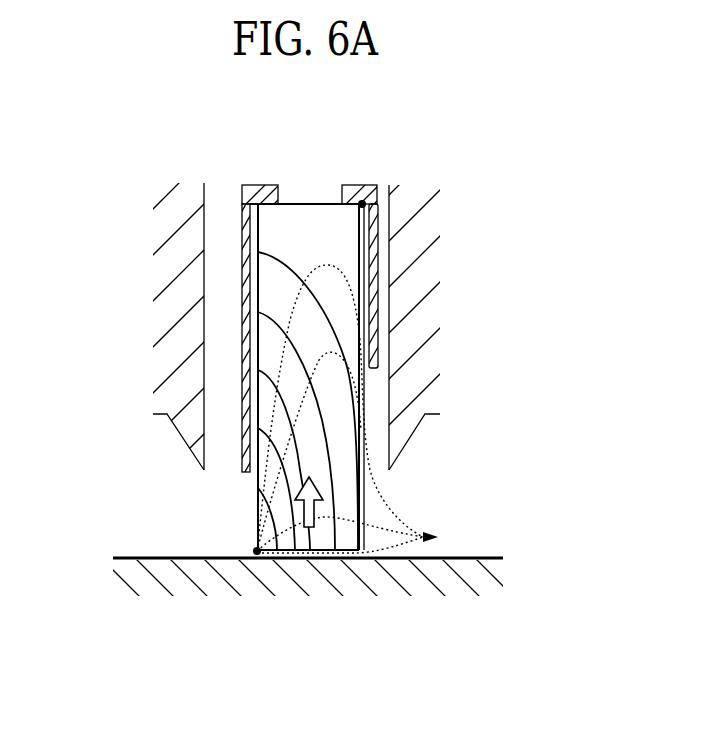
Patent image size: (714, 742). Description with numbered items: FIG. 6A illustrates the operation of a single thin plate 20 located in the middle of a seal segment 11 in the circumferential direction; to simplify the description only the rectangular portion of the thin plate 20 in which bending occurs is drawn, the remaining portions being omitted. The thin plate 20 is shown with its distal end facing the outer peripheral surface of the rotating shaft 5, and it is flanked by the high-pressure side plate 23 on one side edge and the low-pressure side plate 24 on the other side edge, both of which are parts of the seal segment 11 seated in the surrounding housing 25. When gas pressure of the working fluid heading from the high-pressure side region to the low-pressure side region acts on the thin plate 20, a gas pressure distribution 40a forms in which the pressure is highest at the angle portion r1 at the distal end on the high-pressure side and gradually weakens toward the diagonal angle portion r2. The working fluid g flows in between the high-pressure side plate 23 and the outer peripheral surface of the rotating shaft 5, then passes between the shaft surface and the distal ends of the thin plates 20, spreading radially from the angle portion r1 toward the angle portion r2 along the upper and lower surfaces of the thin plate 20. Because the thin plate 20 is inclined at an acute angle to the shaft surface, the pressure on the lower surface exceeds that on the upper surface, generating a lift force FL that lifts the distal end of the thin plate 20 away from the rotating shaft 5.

The rotating shaft 5 is at (237, 572).
The seal segment 11 is at (226, 198).
The thin plate 20 is at (257, 503).
The high-pressure side plate 23 is at (246, 305).
The low-pressure side plate 24 is at (375, 268).
The nozzle body 25 is at (427, 378).
The gas pressure distribution 40a is at (288, 262).
The angle portion r1 is at (257, 550).
The diagonal angle portion r2 is at (362, 204).
The working fluid g is at (257, 552).
The lift force FL is at (307, 527).